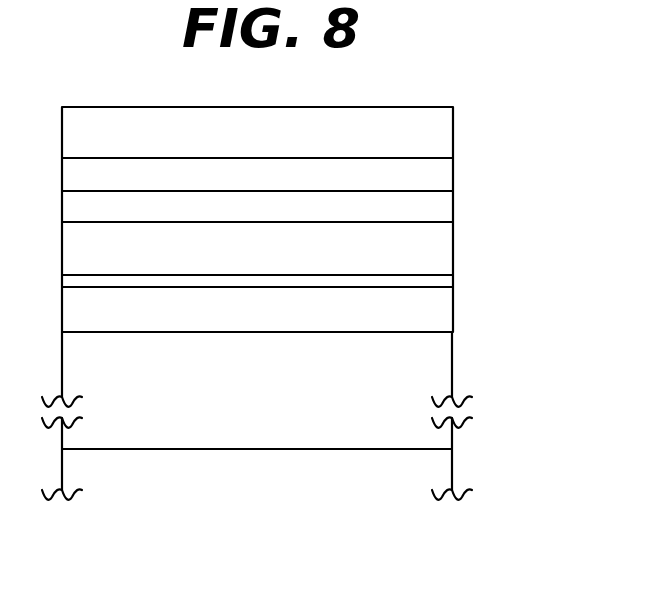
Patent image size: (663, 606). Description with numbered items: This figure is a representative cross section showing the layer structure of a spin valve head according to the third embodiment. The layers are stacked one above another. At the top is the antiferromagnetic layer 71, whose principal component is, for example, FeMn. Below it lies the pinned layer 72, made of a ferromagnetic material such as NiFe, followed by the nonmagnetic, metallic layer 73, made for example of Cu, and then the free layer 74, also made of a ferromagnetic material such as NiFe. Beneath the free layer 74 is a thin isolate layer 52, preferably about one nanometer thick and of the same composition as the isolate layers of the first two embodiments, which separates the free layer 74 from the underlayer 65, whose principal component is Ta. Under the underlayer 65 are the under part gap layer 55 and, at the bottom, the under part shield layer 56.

The antiferromagnetic layer 71 is at (378, 106).
The pinned layer 72 is at (425, 174).
The nonmagnetic metallic layer 73 is at (427, 206).
The free layer 74 is at (427, 251).
The isolate layer 52 is at (452, 283).
The underlayer 65 is at (430, 312).
The under part gap layer 55 is at (430, 368).
The under part shield layer 56 is at (425, 468).